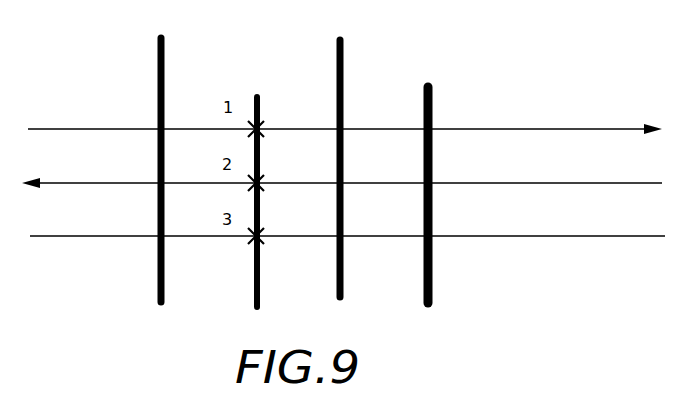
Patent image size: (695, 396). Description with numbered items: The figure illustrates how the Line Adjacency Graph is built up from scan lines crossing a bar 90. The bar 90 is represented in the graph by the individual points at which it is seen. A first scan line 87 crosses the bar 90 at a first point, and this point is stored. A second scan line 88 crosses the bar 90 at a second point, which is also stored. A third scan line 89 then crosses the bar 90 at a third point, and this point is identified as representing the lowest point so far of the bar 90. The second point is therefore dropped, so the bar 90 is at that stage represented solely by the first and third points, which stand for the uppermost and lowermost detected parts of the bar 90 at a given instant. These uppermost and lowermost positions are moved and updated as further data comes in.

The first scan line 87 is at (582, 126).
The second scan line 88 is at (622, 180).
The third scan line 89 is at (620, 233).
The bar 90 is at (262, 285).